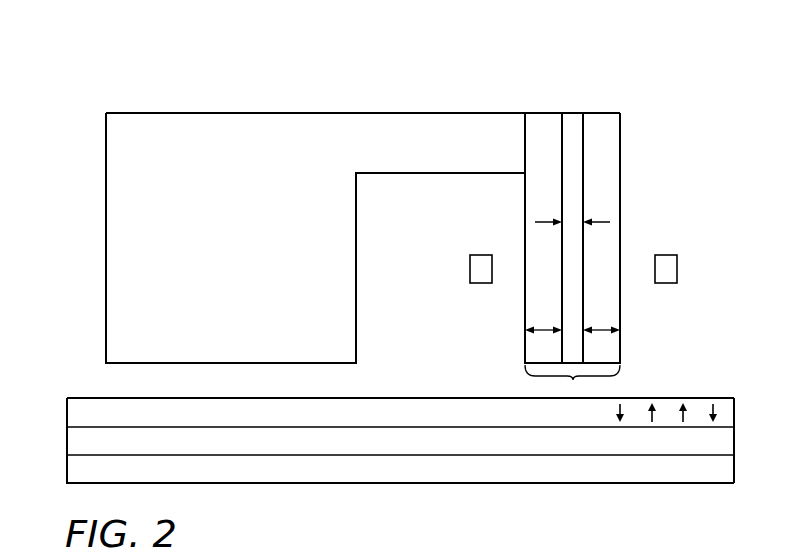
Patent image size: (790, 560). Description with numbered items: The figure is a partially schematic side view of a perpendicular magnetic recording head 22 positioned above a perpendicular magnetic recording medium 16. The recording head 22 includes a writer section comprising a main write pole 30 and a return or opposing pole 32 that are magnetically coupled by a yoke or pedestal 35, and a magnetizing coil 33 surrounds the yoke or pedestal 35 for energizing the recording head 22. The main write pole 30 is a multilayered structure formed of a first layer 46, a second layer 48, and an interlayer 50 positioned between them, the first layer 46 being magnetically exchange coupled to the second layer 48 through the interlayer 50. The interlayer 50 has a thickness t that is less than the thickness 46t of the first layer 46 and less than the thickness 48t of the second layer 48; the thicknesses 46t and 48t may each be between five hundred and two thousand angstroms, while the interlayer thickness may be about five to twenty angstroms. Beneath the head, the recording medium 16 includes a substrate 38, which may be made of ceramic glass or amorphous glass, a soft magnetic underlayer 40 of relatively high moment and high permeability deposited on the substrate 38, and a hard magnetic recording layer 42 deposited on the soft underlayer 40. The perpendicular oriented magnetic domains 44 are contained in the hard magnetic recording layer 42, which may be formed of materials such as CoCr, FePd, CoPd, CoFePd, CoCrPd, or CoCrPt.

The perpendicular magnetic recording head 22 is at (96, 84).
The return or opposing pole 32 is at (118, 265).
The yoke or pedestal 35 is at (421, 127).
The first layer 46 is at (543, 120).
The interlayer 50 is at (572, 120).
The second layer 48 is at (602, 120).
The thickness of the first layer 46t is at (543, 327).
The thickness of the second layer 48t is at (600, 327).
The main write pole 30 is at (573, 379).
The magnetizing coil 33 is at (470, 270).
The perpendicular magnetic recording medium 16 is at (72, 391).
The hard magnetic recording layer 42 is at (342, 408).
The soft magnetic underlayer 40 is at (82, 440).
The substrate 38 is at (703, 470).
The perpendicular oriented magnetic domains 44 is at (718, 410).